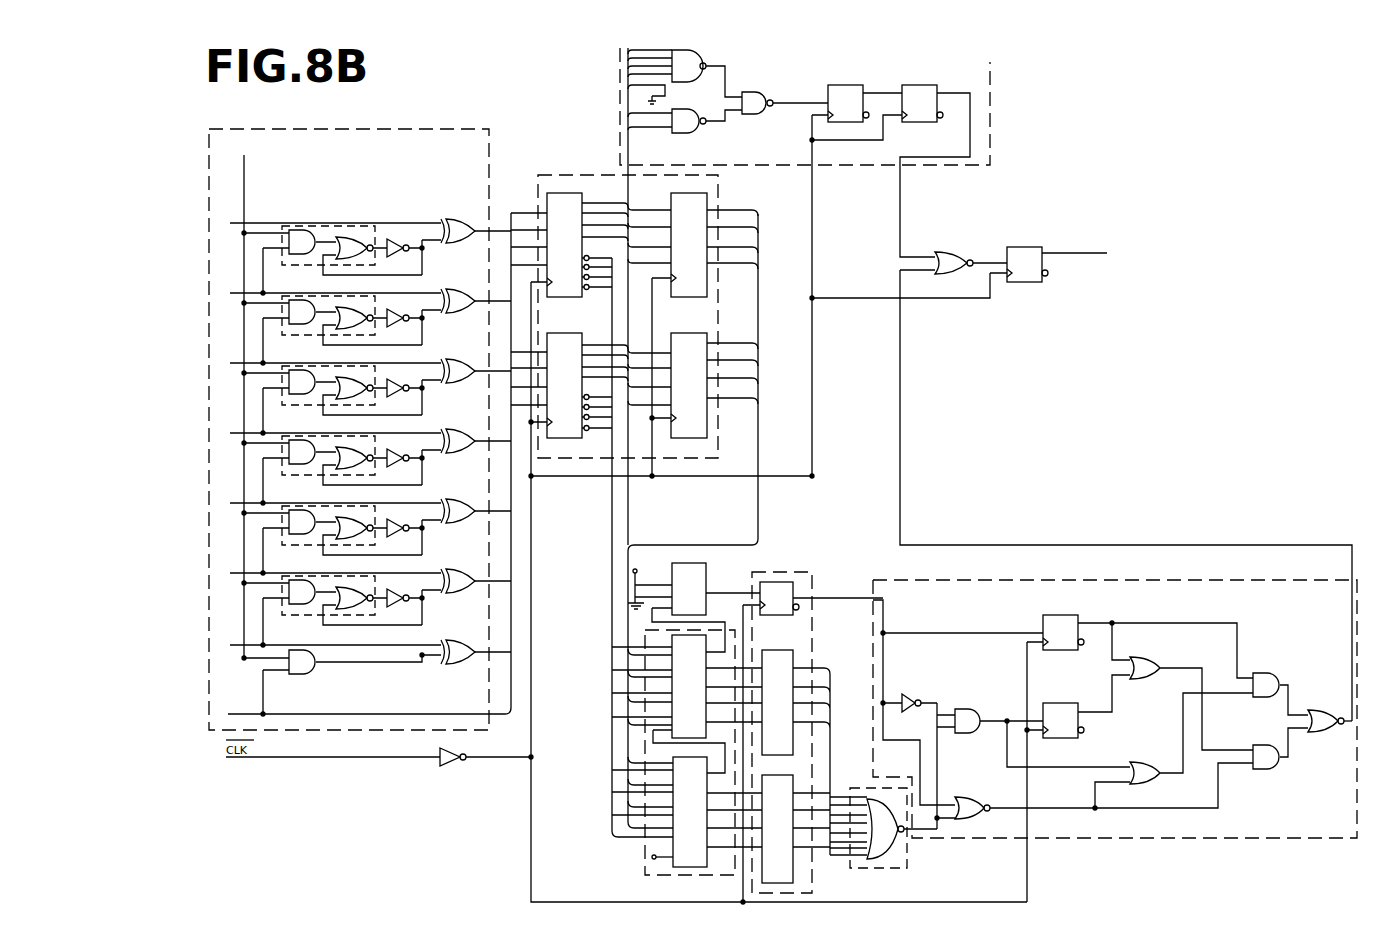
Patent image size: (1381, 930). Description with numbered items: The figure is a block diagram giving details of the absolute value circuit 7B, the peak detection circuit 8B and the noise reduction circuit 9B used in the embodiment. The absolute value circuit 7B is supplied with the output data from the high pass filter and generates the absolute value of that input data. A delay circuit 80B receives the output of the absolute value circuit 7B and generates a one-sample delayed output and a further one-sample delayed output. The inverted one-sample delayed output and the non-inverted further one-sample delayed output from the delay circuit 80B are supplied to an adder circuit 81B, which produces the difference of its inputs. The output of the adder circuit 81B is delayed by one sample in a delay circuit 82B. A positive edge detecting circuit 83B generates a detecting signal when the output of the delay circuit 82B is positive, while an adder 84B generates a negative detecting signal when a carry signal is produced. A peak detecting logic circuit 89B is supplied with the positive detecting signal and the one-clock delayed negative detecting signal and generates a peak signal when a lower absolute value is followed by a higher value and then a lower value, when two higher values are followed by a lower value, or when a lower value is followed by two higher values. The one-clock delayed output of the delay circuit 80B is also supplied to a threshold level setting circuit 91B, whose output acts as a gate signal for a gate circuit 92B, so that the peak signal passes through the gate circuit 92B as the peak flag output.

The absolute value circuit 7B is at (404, 128).
The delay circuit 80B is at (556, 175).
The threshold level setting circuit 91B is at (620, 73).
The noise reduction circuit 9B is at (1015, 110).
The gate circuit 92B is at (960, 250).
The peak detection circuit 8B is at (996, 518).
The adder 84B is at (708, 582).
The delay circuit 82B is at (812, 655).
The adder circuit 81B is at (645, 855).
The positive edge detecting circuit 83B is at (910, 845).
The peak detecting logic circuit 89B is at (1130, 840).